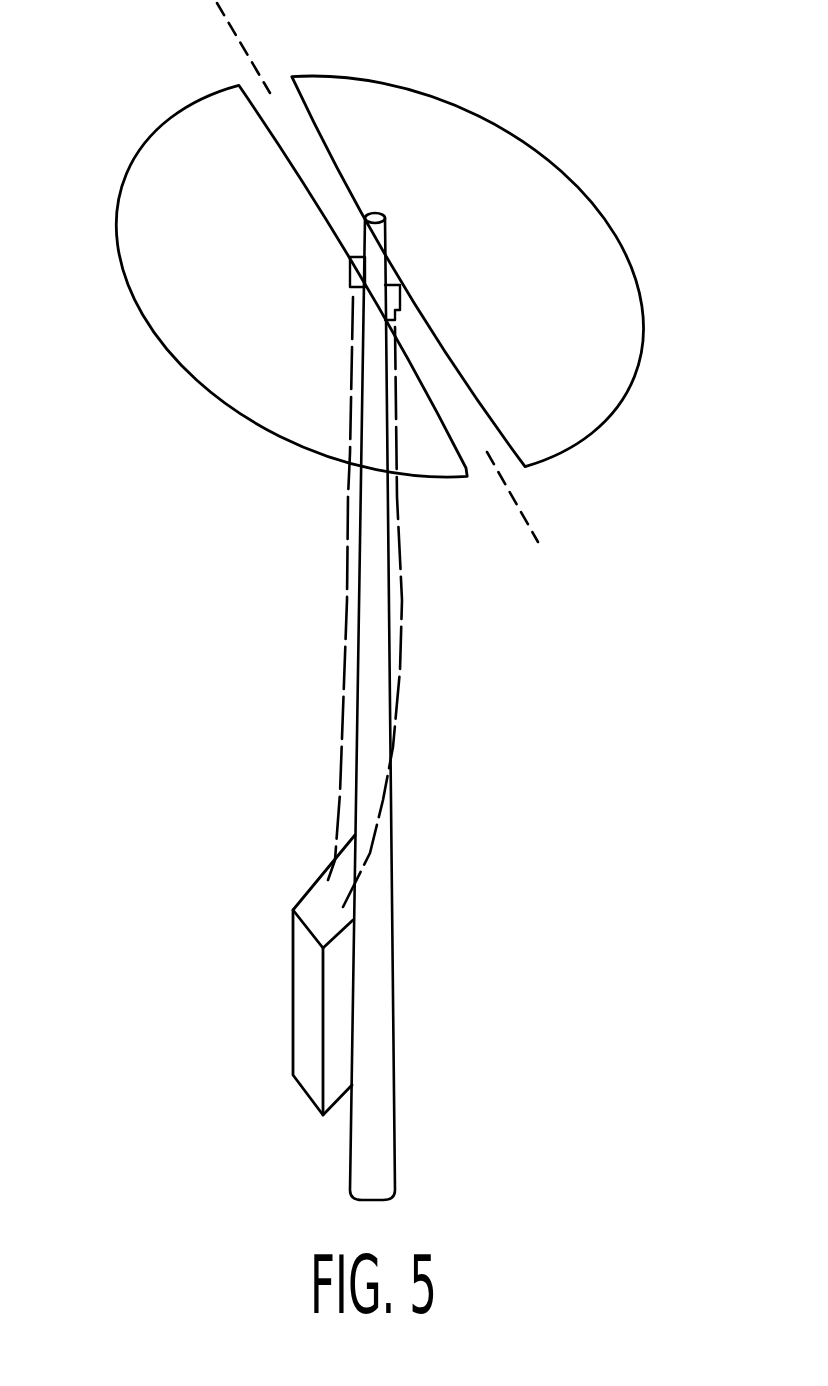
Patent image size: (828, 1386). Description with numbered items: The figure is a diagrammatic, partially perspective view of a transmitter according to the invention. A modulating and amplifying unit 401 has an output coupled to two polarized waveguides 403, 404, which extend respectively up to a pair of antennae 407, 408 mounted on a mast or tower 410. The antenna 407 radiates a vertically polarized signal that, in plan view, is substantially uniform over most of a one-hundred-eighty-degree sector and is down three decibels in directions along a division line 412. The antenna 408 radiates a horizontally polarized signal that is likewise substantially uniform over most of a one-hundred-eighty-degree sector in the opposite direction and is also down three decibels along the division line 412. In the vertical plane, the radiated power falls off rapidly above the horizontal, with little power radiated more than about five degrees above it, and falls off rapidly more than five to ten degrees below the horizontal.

The modulating and amplifying unit 401 is at (298, 1033).
The polarized waveguide 403 is at (347, 602).
The polarized waveguide 404 is at (403, 603).
The antenna 407 is at (352, 257).
The antenna 408 is at (398, 308).
The mast or tower 410 is at (393, 983).
The division line 412 is at (536, 538).